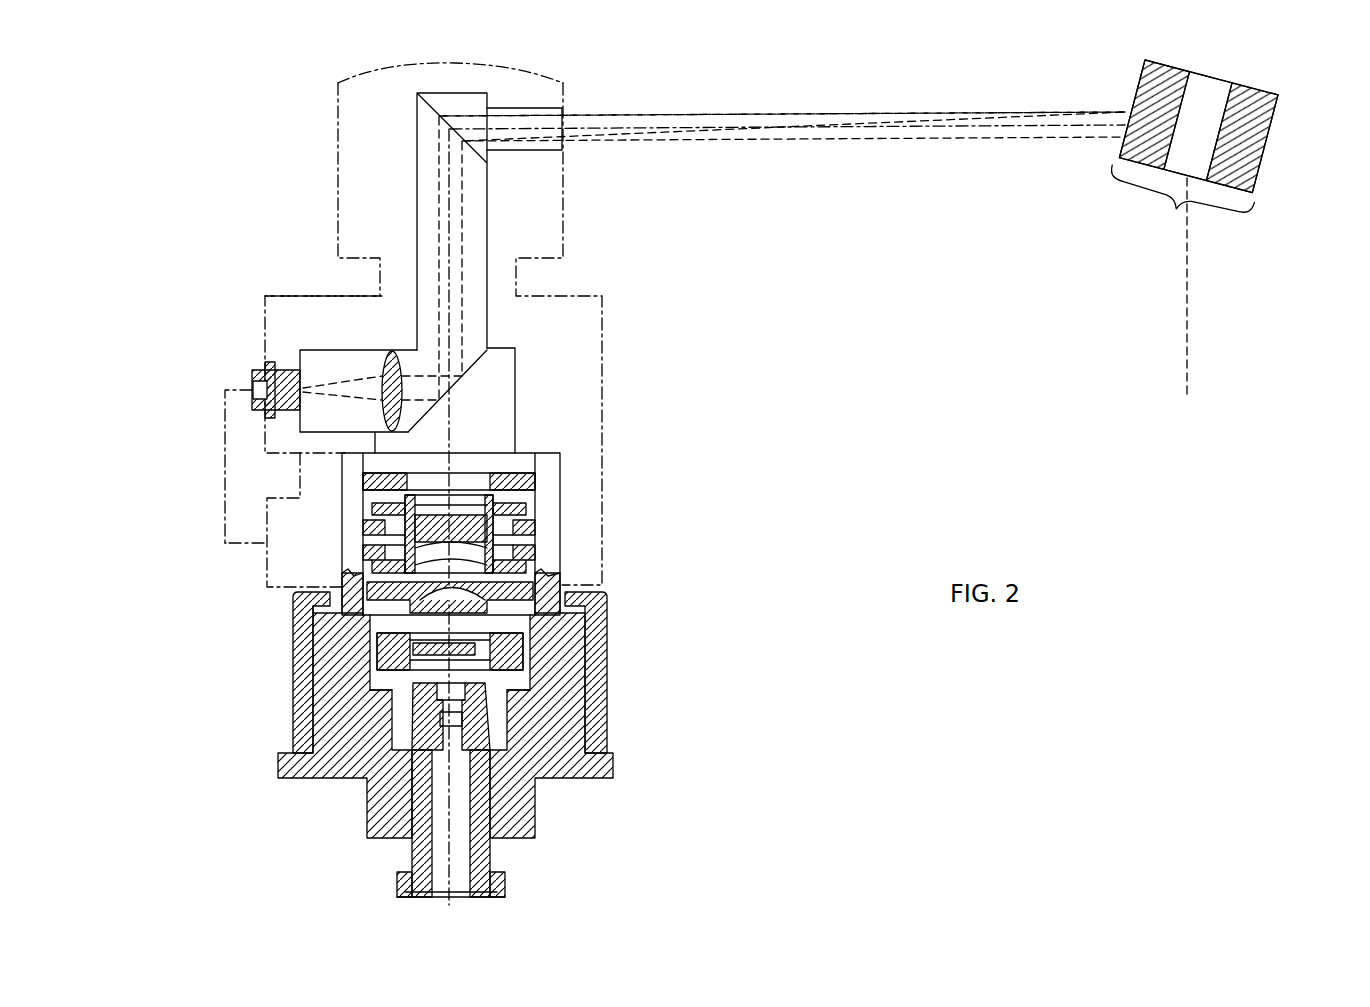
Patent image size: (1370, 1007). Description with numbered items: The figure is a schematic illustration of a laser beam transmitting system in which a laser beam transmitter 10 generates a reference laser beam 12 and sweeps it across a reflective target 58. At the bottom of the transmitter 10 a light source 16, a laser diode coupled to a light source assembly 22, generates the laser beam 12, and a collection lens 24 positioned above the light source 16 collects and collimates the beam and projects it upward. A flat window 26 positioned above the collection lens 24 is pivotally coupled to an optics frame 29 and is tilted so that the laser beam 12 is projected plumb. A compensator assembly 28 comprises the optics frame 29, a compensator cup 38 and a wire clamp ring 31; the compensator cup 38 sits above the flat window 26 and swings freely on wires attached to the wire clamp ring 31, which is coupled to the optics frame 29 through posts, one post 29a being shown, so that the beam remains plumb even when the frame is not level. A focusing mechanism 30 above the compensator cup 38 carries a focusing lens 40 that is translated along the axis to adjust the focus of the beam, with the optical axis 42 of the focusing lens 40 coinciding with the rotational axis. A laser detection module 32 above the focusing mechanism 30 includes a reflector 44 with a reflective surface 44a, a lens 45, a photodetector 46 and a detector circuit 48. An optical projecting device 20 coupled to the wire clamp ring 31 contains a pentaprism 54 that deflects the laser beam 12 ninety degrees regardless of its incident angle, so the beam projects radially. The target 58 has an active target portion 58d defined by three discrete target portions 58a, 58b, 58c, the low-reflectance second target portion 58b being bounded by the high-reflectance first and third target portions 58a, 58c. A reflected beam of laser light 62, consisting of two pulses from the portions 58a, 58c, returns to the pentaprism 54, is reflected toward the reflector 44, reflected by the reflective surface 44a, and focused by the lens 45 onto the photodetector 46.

The laser beam transmitter 10 is at (450, 658).
The reference laser beam 12 is at (827, 127).
The light source 16 is at (440, 723).
The optical projecting device 20 is at (312, 172).
The light source assembly 22 is at (500, 878).
The collection lens 24 is at (467, 700).
The flat window 26 is at (490, 645).
The compensator assembly 28 is at (389, 747).
The optics frame 29 is at (322, 738).
The post 29a is at (341, 540).
The focusing mechanism 30 is at (251, 554).
The wire clamp ring 31 is at (268, 305).
The laser detection module 32 is at (230, 355).
The compensator cup 38 is at (302, 686).
The focusing lens 40 is at (433, 399).
The optical axis 42 is at (490, 462).
The reflector 44 is at (487, 400).
The reflective surface 44a is at (457, 399).
The lens 45 is at (387, 372).
The photodetector 46 is at (255, 384).
The detector circuit 48 is at (278, 508).
The pentaprism 54 is at (455, 93).
The reflective target 58 is at (1206, 219).
The first target portion 58a is at (1154, 114).
The second target portion 58b is at (1198, 126).
The third target portion 58c is at (1242, 138).
The active target portion 58d is at (1180, 196).
The reflected beam of laser light 62 is at (895, 112).